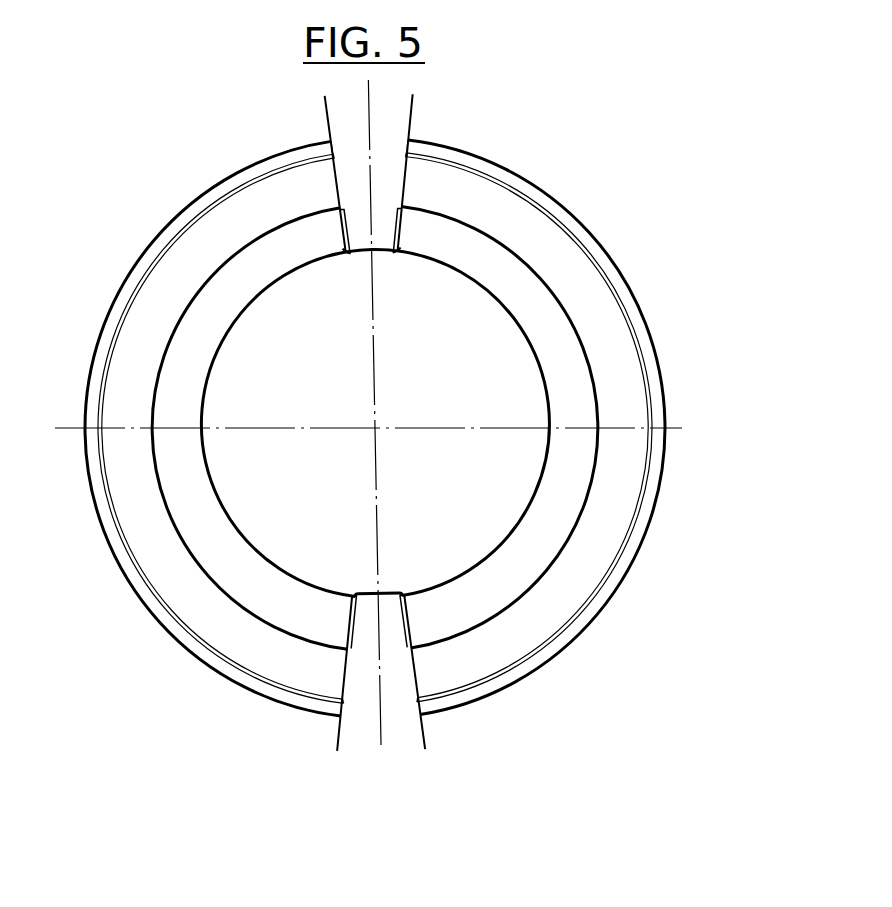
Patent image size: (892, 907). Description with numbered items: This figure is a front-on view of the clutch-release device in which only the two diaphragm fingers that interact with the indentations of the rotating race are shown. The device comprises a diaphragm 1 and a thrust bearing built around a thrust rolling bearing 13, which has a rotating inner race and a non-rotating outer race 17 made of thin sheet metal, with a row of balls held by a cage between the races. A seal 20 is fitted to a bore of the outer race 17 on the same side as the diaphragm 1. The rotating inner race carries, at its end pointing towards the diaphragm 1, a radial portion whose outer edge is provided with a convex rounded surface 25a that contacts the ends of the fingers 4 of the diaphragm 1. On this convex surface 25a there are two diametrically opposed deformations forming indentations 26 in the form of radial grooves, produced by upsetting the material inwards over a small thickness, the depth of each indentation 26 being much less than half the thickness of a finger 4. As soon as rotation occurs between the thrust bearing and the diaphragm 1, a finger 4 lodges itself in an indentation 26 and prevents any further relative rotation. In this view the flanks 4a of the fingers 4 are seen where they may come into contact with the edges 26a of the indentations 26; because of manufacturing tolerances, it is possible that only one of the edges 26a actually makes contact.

The diaphragm 1 is at (412, 111).
The fingers 4 is at (347, 152).
The flanks 4a is at (340, 233).
The thrust rolling bearing 13 is at (606, 248).
The outer race 17 is at (634, 290).
The seal 20 is at (628, 355).
The convex rounded surface 25a is at (588, 462).
The indentations 26 is at (345, 253).
The edges 26a is at (345, 214).